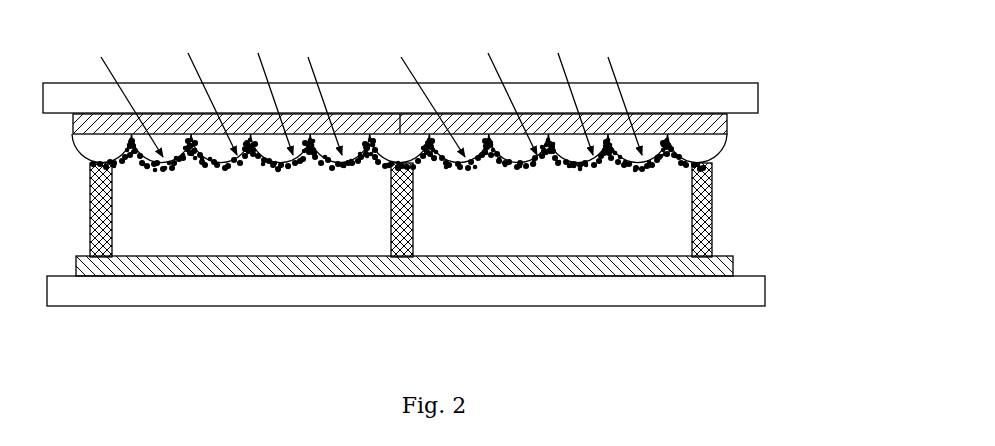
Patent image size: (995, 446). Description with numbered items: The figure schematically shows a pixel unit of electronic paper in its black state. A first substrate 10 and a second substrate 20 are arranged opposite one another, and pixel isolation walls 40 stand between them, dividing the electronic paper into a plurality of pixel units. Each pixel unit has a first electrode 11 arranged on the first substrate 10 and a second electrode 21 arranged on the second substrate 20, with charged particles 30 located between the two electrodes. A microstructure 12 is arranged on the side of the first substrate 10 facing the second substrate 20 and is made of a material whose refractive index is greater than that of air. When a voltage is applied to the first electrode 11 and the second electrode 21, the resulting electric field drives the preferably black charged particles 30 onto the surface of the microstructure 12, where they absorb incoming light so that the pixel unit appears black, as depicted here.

The first substrate 10 is at (727, 105).
The first electrode 11 is at (715, 125).
The microstructure 12 is at (707, 142).
The charged particle 30 is at (583, 172).
The pixel isolation wall 40 is at (712, 220).
The second electrode 21 is at (722, 267).
The second substrate 20 is at (727, 306).